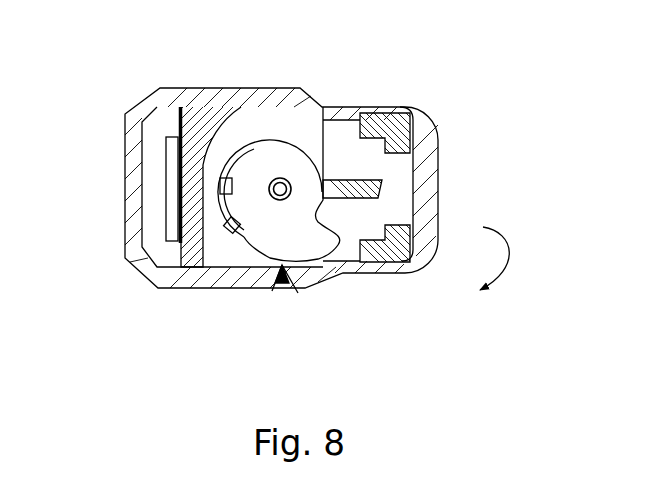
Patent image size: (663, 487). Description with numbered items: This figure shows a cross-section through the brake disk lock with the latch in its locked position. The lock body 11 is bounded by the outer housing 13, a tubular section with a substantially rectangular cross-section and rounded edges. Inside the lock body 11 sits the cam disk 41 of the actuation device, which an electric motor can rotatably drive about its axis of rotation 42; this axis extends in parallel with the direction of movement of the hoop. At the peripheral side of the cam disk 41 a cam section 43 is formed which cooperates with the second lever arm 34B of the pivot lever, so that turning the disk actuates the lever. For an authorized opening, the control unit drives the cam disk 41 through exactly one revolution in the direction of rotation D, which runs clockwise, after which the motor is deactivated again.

The lock body 11 is at (112, 178).
The outer housing 13 is at (199, 90).
The cam disk 41 is at (266, 162).
The axis of rotation 42 is at (273, 199).
The cam section 43 is at (288, 282).
The second lever arm 34B is at (372, 188).
The direction of rotation D is at (512, 271).